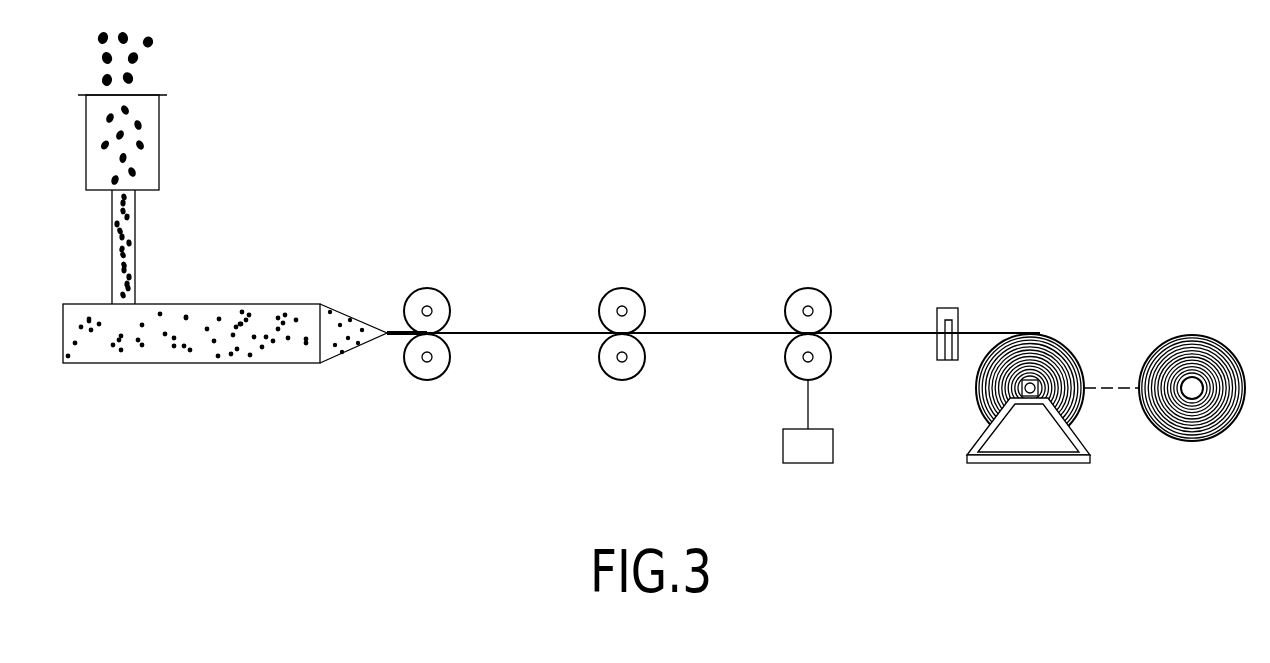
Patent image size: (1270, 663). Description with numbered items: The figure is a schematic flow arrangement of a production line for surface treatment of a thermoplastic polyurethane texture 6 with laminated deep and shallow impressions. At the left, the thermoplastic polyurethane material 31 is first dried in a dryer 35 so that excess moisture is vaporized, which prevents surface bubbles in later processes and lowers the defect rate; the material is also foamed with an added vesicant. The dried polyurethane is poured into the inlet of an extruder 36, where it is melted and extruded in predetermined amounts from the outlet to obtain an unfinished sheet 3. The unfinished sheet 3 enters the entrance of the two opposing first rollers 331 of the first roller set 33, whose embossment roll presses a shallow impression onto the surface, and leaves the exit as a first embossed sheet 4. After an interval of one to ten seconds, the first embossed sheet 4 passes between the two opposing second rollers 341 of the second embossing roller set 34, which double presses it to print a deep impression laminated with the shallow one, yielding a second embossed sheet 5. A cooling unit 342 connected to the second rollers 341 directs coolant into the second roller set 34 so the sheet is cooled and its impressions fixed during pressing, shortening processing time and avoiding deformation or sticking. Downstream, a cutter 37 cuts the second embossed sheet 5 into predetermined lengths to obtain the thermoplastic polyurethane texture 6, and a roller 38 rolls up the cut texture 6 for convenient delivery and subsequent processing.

The thermoplastic polyurethane material 31 is at (153, 41).
The dryer 35 is at (160, 140).
The extruder 36 is at (173, 363).
The unfinished sheet 3 is at (520, 333).
The first roller set 33 is at (654, 294).
The first rollers 331 is at (620, 286).
The first embossed sheet 4 is at (707, 333).
The second embossing roller set 34 is at (840, 294).
The second rollers 341 is at (806, 286).
The cooling unit 342 is at (808, 463).
The second embossed sheet 5 is at (878, 333).
The cutter 37 is at (948, 308).
The roller 38 is at (1055, 338).
The thermoplastic polyurethane texture 6 is at (1208, 321).